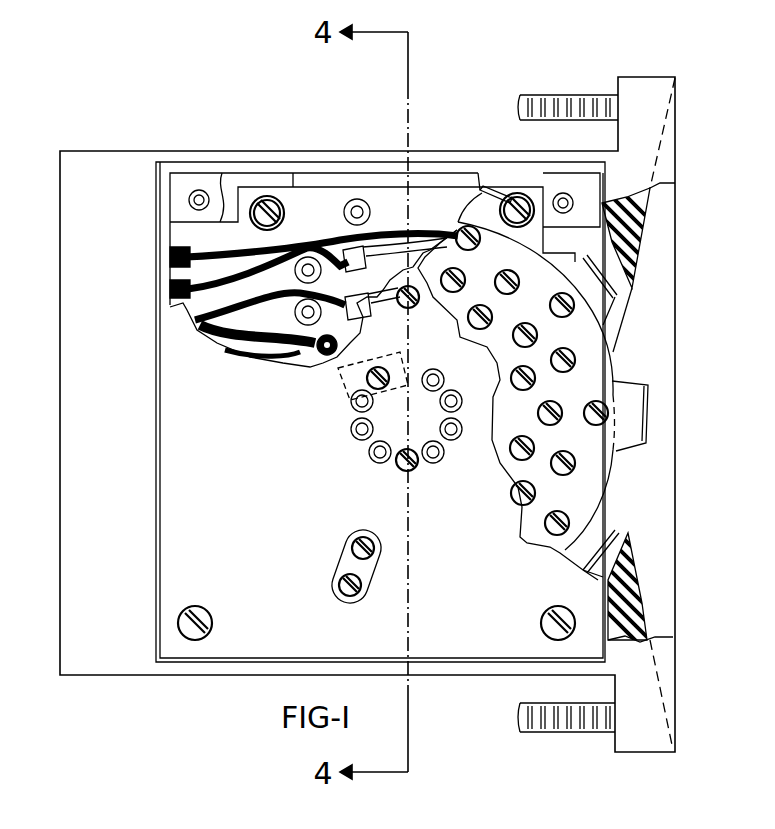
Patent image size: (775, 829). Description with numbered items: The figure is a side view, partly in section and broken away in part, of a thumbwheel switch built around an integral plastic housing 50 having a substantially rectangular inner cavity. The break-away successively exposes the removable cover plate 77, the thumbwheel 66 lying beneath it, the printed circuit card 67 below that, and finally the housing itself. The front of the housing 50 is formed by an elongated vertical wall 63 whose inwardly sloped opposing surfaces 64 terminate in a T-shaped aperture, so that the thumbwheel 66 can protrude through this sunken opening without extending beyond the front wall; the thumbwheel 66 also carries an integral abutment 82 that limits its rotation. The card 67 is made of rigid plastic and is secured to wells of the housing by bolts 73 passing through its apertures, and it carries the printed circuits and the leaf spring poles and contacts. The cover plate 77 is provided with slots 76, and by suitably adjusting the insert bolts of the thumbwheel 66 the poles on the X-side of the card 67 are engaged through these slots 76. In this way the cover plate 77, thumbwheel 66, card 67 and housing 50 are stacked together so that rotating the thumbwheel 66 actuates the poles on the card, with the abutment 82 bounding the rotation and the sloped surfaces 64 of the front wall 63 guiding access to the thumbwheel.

The housing 50 is at (694, 68).
The elongated vertical wall 63 is at (673, 300).
The inwardly sloped opposing surfaces 64 is at (650, 228).
The thumbwheel 66 is at (632, 413).
The card 67 is at (323, 221).
The bolts 73 is at (268, 196).
The slots 76 is at (365, 566).
The cover plate 77 is at (260, 506).
The abutment 82 is at (338, 372).